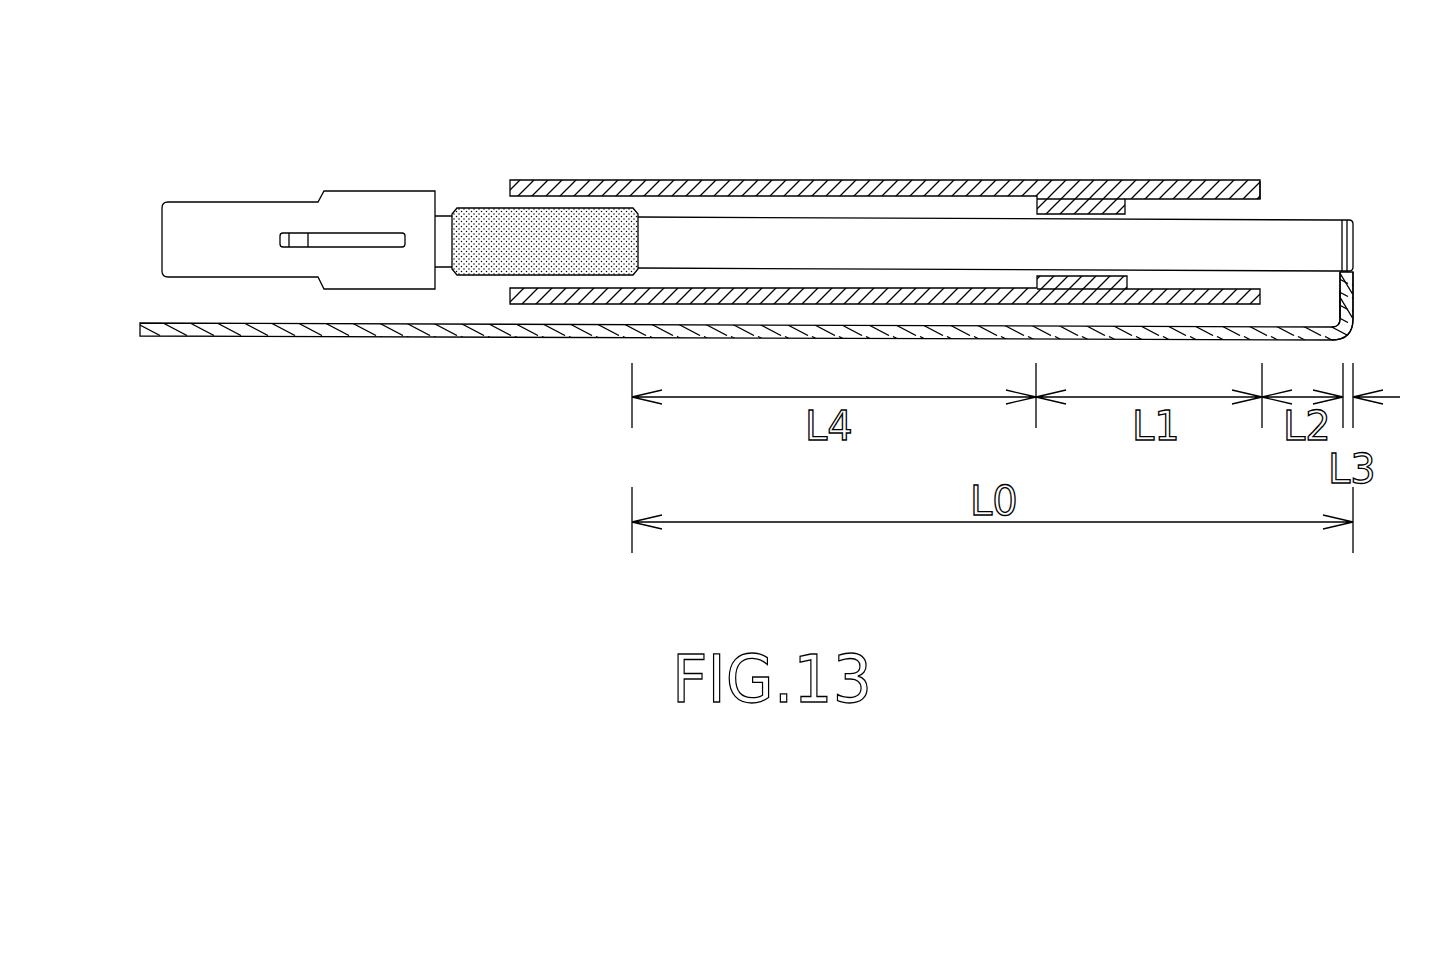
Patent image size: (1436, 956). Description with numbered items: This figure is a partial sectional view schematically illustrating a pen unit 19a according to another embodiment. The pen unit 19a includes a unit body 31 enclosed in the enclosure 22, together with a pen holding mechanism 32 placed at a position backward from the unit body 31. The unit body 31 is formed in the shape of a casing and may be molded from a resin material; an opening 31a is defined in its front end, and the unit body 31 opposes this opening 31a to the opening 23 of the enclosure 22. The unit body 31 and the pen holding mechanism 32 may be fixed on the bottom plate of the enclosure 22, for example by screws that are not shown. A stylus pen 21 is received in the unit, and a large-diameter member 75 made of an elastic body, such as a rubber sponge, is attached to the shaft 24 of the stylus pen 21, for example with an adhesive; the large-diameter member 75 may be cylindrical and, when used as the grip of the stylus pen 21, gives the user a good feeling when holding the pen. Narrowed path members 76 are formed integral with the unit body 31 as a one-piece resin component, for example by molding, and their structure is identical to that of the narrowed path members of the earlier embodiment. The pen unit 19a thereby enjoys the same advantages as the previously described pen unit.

The pen unit 19a is at (968, 137).
The stylus pen 21 is at (1003, 198).
The enclosure 22 is at (562, 340).
The opening 23 is at (1347, 282).
The shaft 24 is at (813, 218).
The unit body 31 is at (731, 181).
The opening 31a is at (1262, 192).
The pen holding mechanism 32 is at (325, 193).
The large-diameter member 75 is at (487, 207).
The narrowed path members 76 is at (1129, 206).